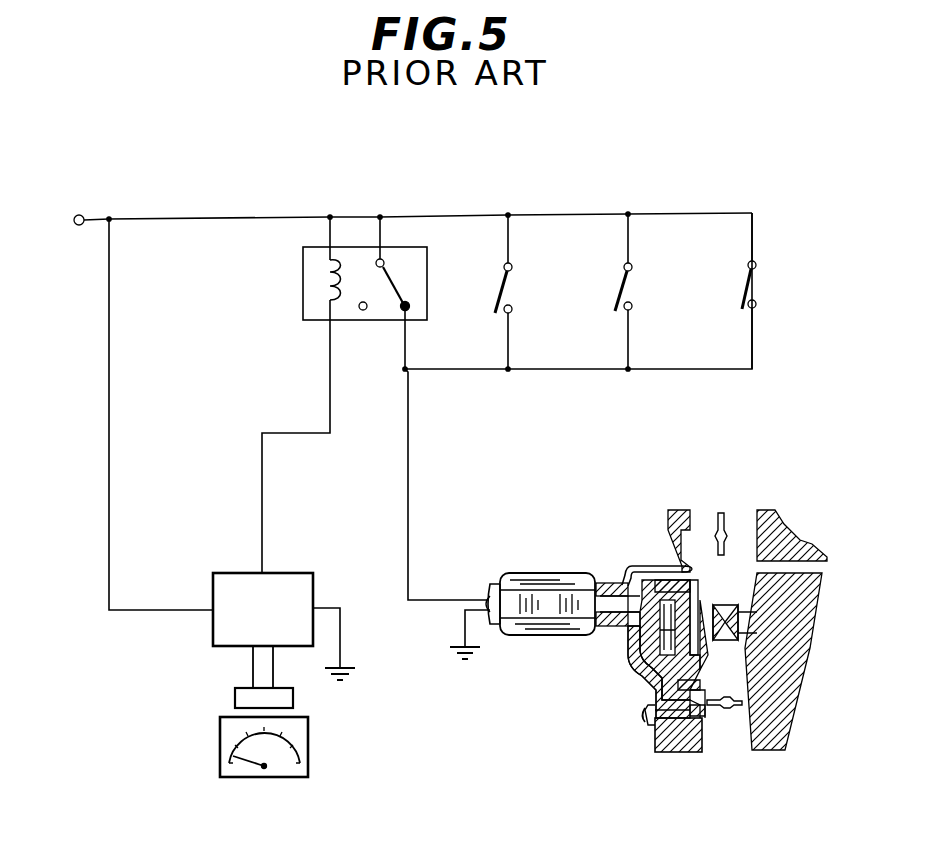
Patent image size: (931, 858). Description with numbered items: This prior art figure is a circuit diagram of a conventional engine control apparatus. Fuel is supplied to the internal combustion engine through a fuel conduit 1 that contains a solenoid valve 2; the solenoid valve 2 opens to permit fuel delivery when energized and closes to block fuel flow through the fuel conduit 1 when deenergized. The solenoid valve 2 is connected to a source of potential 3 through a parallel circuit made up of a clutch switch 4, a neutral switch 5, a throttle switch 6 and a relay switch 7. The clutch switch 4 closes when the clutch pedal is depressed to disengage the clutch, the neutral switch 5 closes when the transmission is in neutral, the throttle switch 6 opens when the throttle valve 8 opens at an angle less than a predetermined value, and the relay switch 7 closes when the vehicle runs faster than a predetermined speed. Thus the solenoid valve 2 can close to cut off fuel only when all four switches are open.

The fuel conduit 1 is at (640, 668).
The solenoid valve 2 is at (565, 577).
The source of potential 3 is at (79, 215).
The clutch switch 4 is at (746, 270).
The neutral switch 5 is at (622, 270).
The throttle switch 6 is at (503, 270).
The relay switch 7 is at (405, 247).
The throttle valve 8 is at (731, 710).